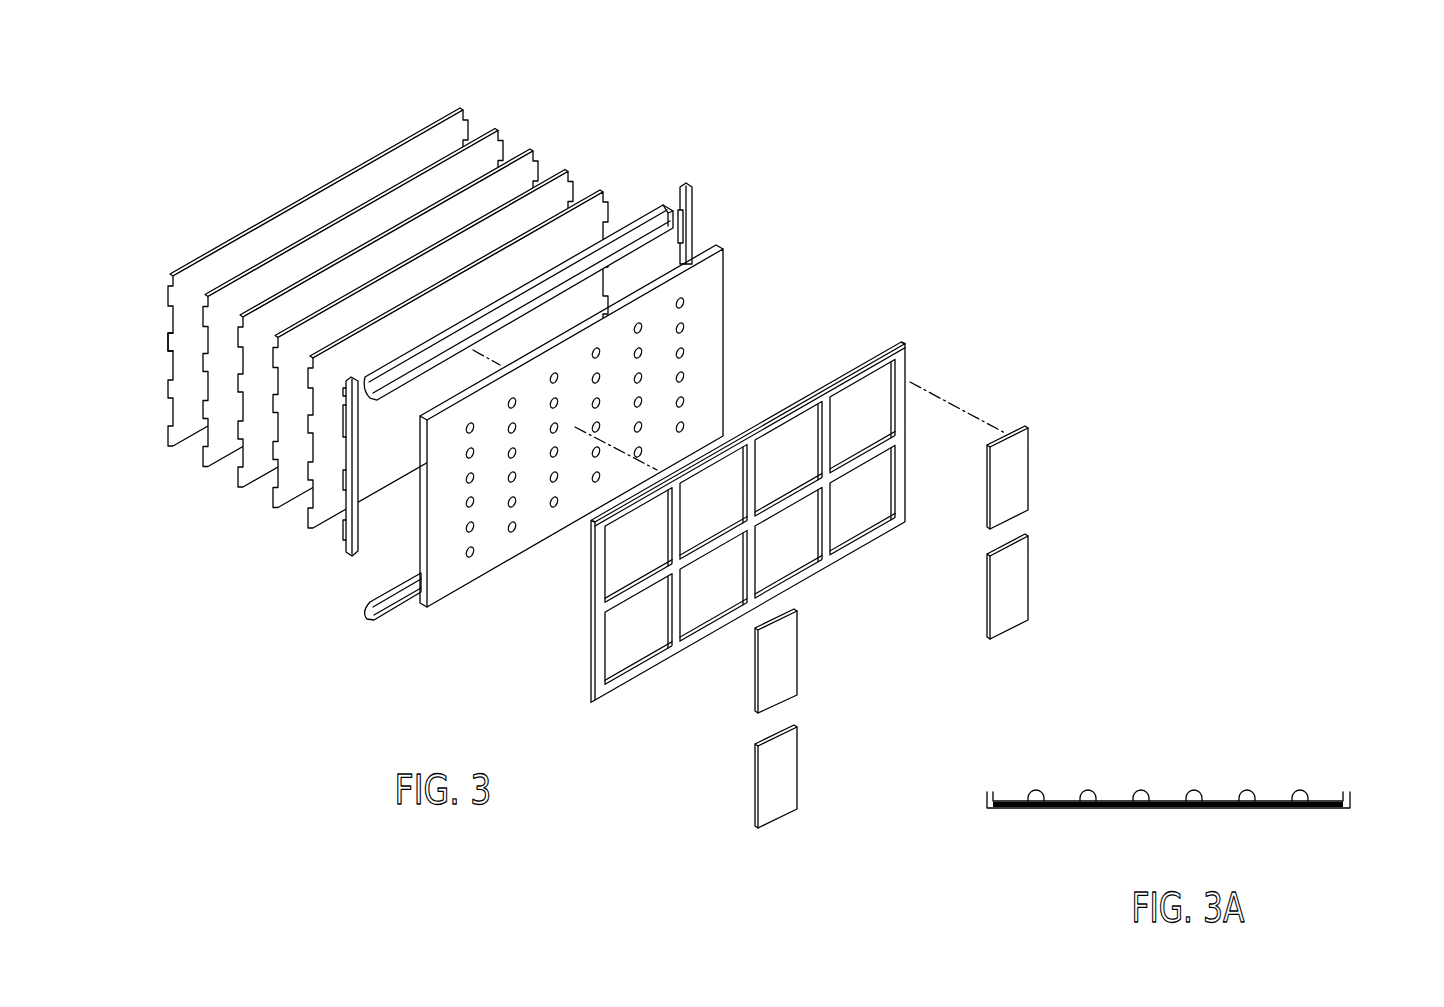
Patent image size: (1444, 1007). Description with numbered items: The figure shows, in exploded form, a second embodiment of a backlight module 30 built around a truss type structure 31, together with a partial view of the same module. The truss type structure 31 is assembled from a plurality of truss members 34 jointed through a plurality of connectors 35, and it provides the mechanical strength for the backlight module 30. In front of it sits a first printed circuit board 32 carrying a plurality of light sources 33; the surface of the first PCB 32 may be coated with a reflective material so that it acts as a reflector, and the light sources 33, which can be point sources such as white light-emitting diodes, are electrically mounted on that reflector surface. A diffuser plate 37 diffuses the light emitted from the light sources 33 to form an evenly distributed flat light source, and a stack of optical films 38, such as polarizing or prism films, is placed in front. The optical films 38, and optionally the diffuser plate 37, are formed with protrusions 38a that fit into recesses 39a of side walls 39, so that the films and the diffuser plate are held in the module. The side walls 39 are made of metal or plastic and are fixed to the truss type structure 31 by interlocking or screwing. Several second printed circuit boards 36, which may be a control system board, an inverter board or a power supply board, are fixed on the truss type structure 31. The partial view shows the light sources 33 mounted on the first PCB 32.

In FIG. 3, the backlight module 30 is at (848, 192).
In FIG. 3, the truss type structure 31 is at (920, 360).
In FIG. 3, the first printed circuit board 32 is at (722, 292).
In FIG. 3A, the first printed circuit board 32 is at (1352, 806).
In FIG. 3, the light sources 33 is at (684, 354).
In FIG. 3A, the light sources 33 is at (1035, 792).
In FIG. 3, the truss members 34 is at (875, 357).
In FIG. 3, the connectors 35 is at (823, 383).
In FIG. 3, the second printed circuit boards 36 is at (1018, 470).
In FIG. 3, the diffuser plate 37 is at (592, 210).
In FIG. 3, the optical films 38 is at (153, 442).
In FIG. 3, the protrusions 38a is at (168, 342).
In FIG. 3, the side walls 39 is at (690, 185).
In FIG. 3, the recesses 39a is at (681, 207).